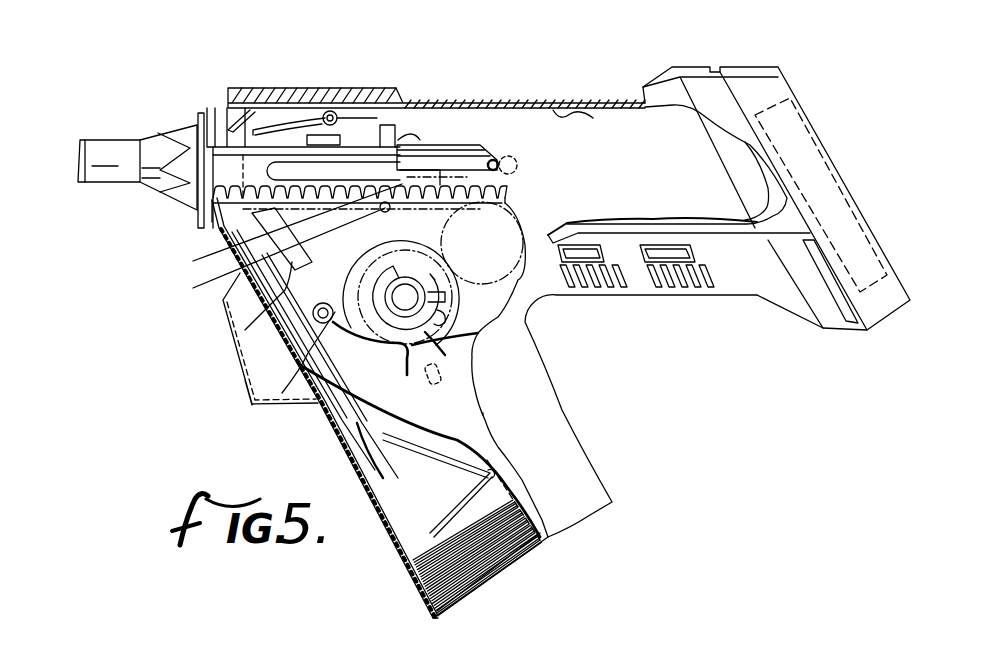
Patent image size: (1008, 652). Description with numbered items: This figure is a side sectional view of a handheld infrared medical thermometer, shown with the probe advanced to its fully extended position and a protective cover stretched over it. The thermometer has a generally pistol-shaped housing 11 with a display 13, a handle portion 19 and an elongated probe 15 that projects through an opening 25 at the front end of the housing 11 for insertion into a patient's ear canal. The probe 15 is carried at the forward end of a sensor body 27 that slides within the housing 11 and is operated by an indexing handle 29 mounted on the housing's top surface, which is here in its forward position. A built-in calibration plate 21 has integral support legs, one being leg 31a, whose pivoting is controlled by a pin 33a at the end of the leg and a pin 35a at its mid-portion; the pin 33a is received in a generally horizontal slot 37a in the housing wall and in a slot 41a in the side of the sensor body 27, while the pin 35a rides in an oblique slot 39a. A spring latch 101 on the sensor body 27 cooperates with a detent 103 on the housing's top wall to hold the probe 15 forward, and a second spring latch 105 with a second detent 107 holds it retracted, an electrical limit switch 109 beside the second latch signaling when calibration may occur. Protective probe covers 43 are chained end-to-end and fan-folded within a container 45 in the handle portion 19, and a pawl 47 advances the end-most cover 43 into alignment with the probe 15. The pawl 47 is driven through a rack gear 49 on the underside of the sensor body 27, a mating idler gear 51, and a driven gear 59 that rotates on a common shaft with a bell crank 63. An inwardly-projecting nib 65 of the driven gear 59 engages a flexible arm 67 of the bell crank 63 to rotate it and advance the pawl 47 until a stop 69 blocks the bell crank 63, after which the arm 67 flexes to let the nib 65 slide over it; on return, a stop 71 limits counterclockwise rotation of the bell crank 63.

The housing 11 is at (450, 150).
The display 13 is at (827, 167).
The elongated probe 15 is at (128, 150).
The handle portion 19 is at (598, 470).
The calibration plate 21 is at (281, 229).
The opening 25 is at (217, 127).
The sensor body 27 is at (450, 167).
The indexing handle 29 is at (283, 90).
The support leg 31a is at (266, 256).
The pin 33a is at (498, 162).
The pin 35a is at (387, 210).
The slot 37a is at (518, 165).
The slot 39a is at (412, 122).
The slot 41a is at (460, 183).
The protective probe cover 43 is at (202, 222).
The container 45 is at (478, 438).
The pawl 47 is at (245, 330).
The rack gear 49 is at (285, 220).
The idler gear 51 is at (505, 203).
The driven gear 59 is at (488, 343).
The bell crank 63 is at (292, 400).
The nib 65 is at (404, 367).
The flexible arm 67 is at (440, 352).
The stop 69 is at (322, 302).
The stop 71 is at (438, 381).
The spring latch 101 is at (360, 133).
The detent 103 is at (312, 106).
The second spring latch 105 is at (257, 130).
The second detent 107 is at (575, 100).
The electrical limit switch 109 is at (387, 153).